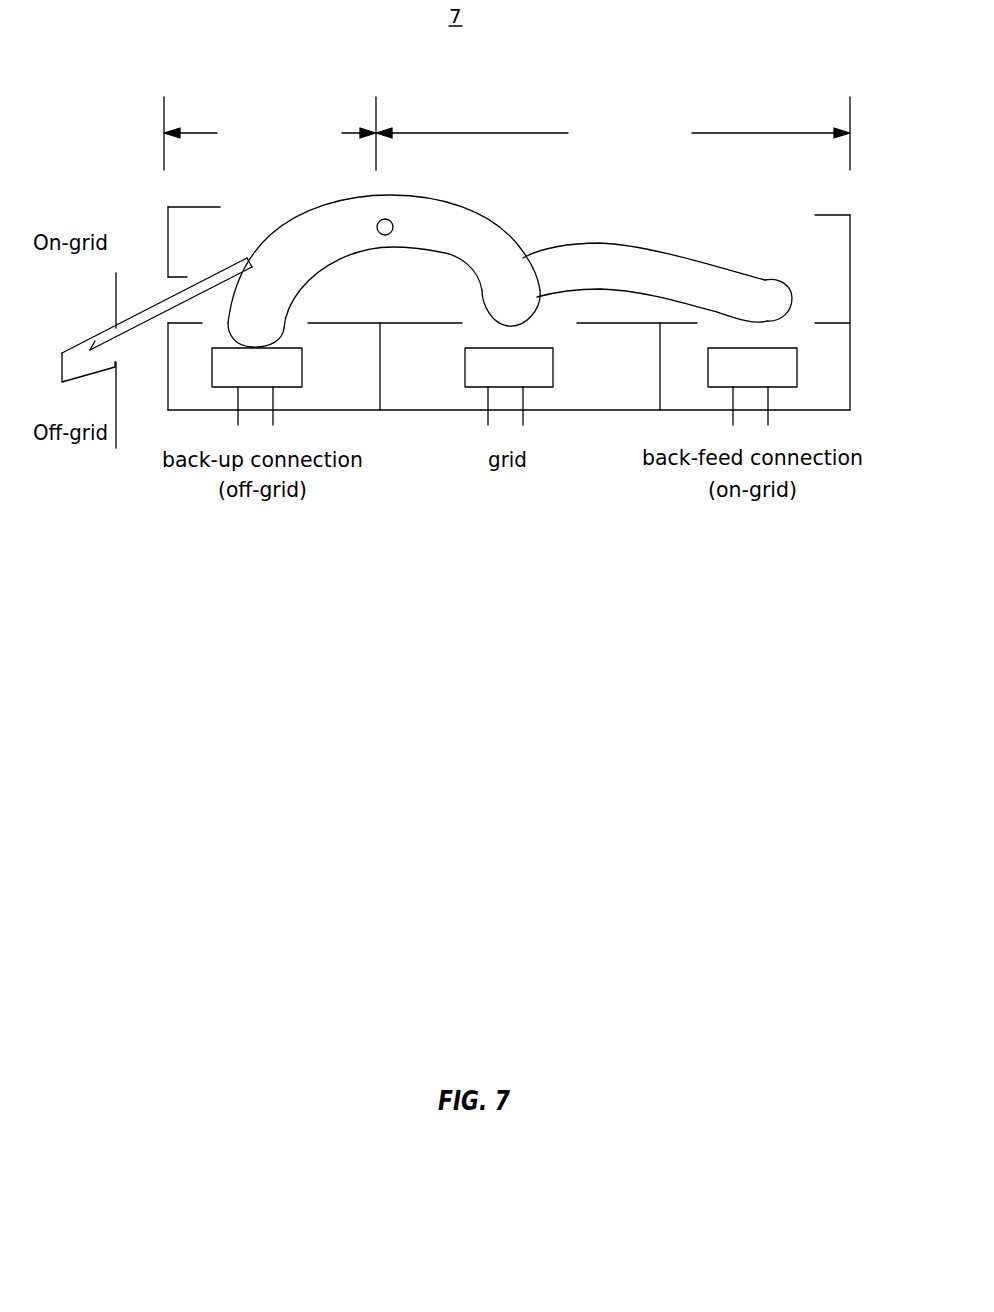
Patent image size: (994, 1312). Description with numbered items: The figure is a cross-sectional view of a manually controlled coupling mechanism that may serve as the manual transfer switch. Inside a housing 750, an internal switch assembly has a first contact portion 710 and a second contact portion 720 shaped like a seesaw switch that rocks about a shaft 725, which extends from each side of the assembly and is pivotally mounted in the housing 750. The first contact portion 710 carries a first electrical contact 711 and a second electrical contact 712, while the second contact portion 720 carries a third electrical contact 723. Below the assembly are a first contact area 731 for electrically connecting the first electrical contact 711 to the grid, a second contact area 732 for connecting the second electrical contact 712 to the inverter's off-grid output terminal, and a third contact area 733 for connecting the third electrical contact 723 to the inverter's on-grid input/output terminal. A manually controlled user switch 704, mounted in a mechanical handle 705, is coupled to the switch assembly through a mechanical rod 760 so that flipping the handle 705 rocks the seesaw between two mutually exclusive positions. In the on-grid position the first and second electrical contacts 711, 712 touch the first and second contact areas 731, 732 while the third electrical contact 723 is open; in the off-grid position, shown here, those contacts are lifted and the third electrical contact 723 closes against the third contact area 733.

The manually controlled user switch 704 is at (93, 338).
The mechanical handle 705 is at (62, 365).
The first contact portion 710 is at (613, 208).
The first electrical contact 711 is at (508, 290).
The second electrical contact 712 is at (755, 303).
The second contact portion 720 is at (352, 211).
The third electrical contact 723 is at (263, 318).
The shaft 725 is at (391, 221).
The first contact area 731 is at (527, 380).
The second contact area 732 is at (770, 380).
The third contact area 733 is at (275, 380).
The housing 750 is at (852, 375).
The mechanical rod 760 is at (207, 278).